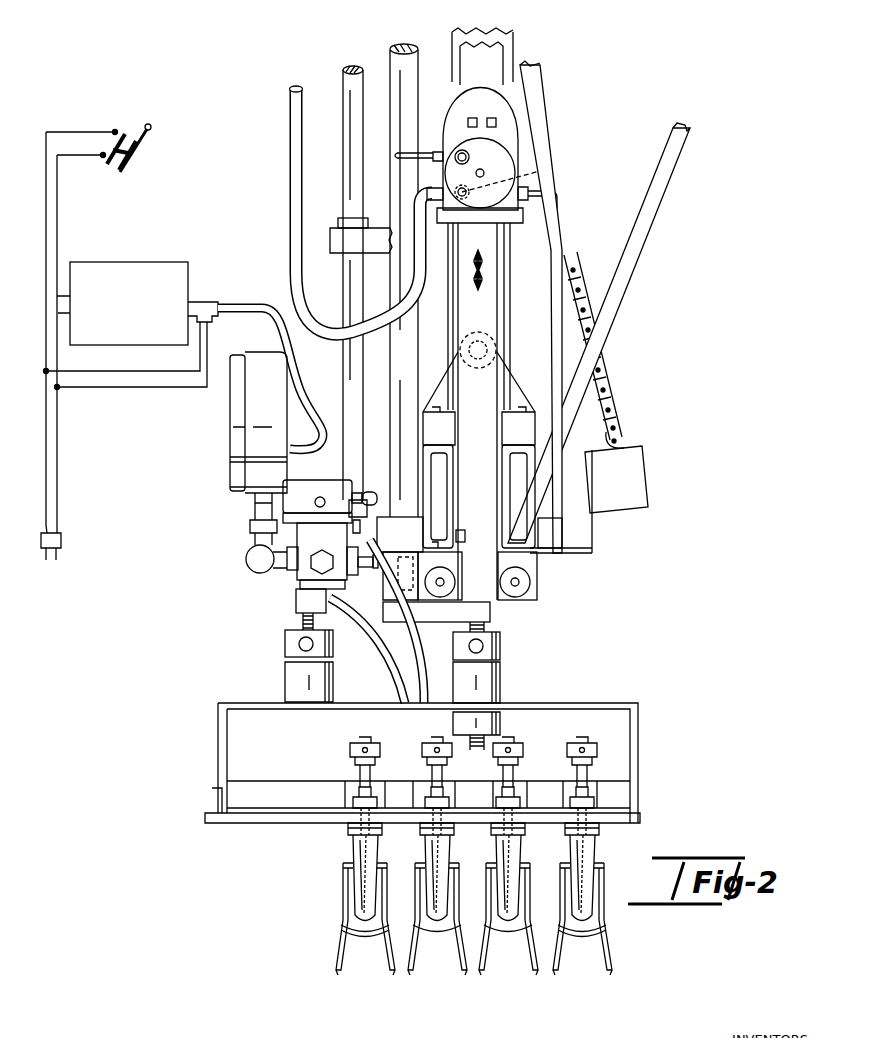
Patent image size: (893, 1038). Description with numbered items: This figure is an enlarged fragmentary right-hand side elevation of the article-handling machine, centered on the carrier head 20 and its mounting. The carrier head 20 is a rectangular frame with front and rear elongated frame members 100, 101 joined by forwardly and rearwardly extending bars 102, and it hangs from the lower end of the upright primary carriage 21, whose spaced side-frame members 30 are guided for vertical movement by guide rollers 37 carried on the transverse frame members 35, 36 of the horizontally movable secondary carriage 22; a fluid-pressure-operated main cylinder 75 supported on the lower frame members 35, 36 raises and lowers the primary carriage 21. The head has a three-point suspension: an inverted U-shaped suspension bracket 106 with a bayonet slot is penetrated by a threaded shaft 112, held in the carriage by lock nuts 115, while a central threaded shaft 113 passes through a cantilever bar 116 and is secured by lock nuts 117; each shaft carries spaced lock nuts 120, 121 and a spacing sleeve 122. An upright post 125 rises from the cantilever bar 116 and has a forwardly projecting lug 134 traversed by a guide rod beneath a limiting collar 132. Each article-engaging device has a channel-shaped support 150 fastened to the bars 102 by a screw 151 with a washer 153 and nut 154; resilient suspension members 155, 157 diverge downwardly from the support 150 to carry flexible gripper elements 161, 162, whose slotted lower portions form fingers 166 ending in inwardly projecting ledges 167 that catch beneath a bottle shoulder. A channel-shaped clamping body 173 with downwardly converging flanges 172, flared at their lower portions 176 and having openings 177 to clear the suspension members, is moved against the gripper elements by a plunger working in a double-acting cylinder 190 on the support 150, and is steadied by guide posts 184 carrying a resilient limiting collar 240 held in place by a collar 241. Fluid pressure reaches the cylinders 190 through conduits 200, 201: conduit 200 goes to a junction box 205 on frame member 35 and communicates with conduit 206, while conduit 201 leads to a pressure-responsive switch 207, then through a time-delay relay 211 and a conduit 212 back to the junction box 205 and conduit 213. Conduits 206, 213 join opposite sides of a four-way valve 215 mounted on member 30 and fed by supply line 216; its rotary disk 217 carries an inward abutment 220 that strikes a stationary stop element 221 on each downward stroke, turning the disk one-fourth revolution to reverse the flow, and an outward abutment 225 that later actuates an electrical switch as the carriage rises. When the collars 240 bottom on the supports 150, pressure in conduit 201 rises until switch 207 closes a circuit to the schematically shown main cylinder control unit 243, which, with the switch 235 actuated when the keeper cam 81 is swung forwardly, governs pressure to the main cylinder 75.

The carrier head 20 is at (642, 785).
The primary carriage 21 is at (508, 537).
The secondary carriage 22 is at (535, 518).
The upright side-frame member 30 is at (495, 63).
The lower transverse frame member 35 is at (440, 492).
The lower transverse frame member 36 is at (518, 492).
The guide rollers 37 is at (530, 590).
The main cylinder 75 is at (540, 38).
The keeper cam 81 is at (145, 137).
The front transverse elongated frame member 100 is at (212, 822).
The rear transverse elongated frame member 101 is at (638, 805).
The bar 102 is at (296, 818).
The suspension bracket 106 is at (596, 706).
The threaded shaft 112 is at (486, 624).
The central threaded shaft 113 is at (303, 621).
The lock nuts 115 is at (491, 612).
The cantilever bar 116 is at (297, 583).
The lock nuts 117 is at (296, 603).
The lock nut 120 is at (500, 722).
The lock nut 121 is at (285, 645).
The spacing sleeve 122 is at (285, 672).
The upright post 125 is at (390, 60).
The limiting collar 132 is at (338, 220).
The lug 134 is at (340, 250).
The channel-shaped support 150 is at (348, 838).
The screw 151 is at (428, 795).
The washer 153 is at (350, 802).
The nut 154 is at (352, 792).
The suspension member 155 is at (365, 846).
The suspension member 157 is at (362, 855).
The gripper element 161 is at (335, 977).
The gripper element 162 is at (395, 977).
The flexible fingers 166 is at (390, 952).
The ledge 167 is at (387, 975).
The clamping flange 172 is at (375, 890).
The clamping body 173 is at (340, 890).
The flared portion 176 is at (341, 928).
The openings 177 is at (343, 868).
The guide post 184 is at (372, 775).
The double-acting cylinder 190 is at (546, 796).
The conduit 200 is at (405, 686).
The conduit 201 is at (357, 640).
The junction box 205 is at (405, 527).
The conduit 206 is at (358, 368).
The pressure responsive switch 207 is at (270, 358).
The time-delay relay 211 is at (325, 478).
The conduit 212 is at (376, 497).
The conduit 213 is at (560, 550).
The four-way valve 215 is at (512, 135).
The fluid pressure conduit 216 is at (289, 152).
The rotary disk 217 is at (545, 183).
The abutment 220 is at (553, 164).
The stop element 221 is at (462, 530).
The abutment 225 is at (469, 157).
The switch 235 is at (118, 136).
The limiting collar 240 is at (350, 757).
The collar 241 is at (378, 745).
The main cylinder control unit 243 is at (148, 232).